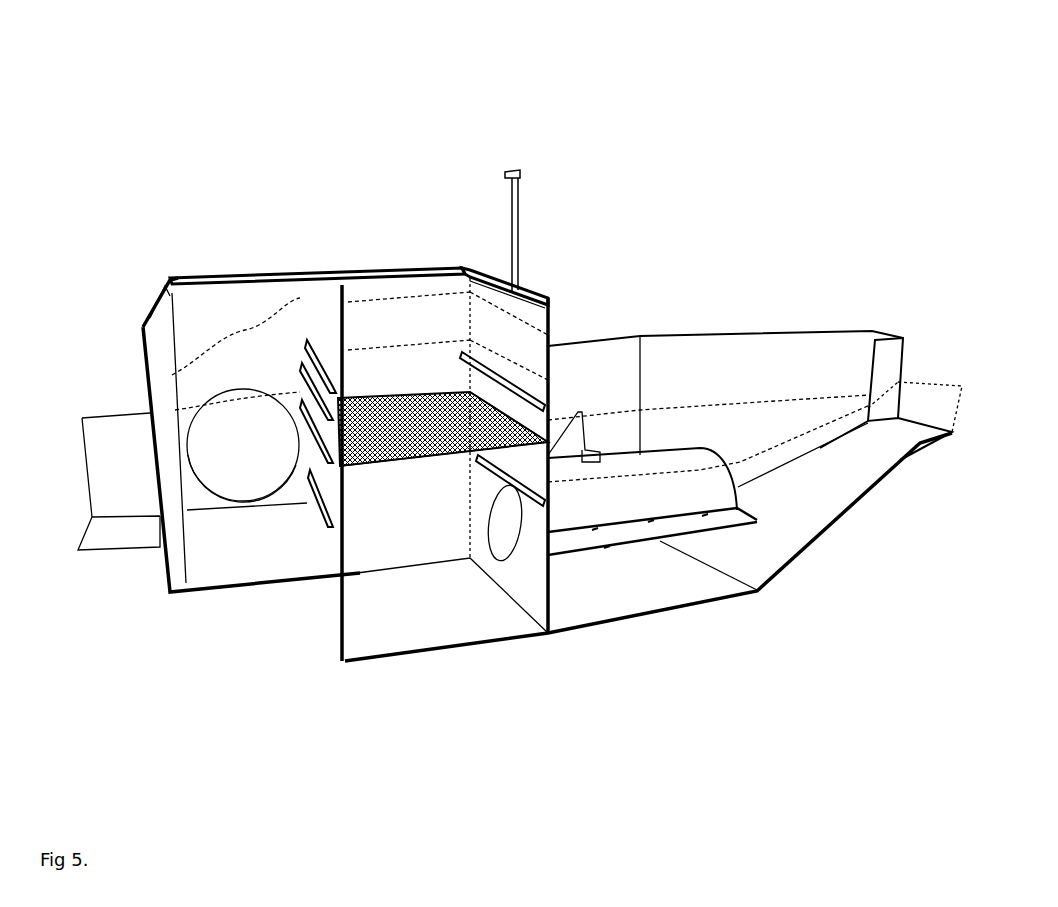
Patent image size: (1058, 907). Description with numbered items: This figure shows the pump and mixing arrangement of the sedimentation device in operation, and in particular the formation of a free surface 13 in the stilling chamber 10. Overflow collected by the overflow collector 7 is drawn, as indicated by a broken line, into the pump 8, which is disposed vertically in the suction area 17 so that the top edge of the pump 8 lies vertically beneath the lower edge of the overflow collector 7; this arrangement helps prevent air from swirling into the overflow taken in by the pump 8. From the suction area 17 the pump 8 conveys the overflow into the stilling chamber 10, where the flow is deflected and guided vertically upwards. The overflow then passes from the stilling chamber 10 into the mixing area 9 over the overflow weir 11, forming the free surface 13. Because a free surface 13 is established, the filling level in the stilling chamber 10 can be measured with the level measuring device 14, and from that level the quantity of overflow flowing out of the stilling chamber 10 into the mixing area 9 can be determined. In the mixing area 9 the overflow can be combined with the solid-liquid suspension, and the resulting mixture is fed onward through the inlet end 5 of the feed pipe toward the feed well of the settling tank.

The inlet end of the feed pipe 5 is at (240, 440).
The overflow collector 7 is at (118, 462).
The pump 8 is at (620, 552).
The mixing area 9 is at (258, 517).
The stilling chamber 10 is at (428, 510).
The overflow weir 11 is at (318, 350).
The free surface 13 is at (440, 305).
The level measuring device 14 is at (525, 165).
The suction area 17 is at (835, 475).